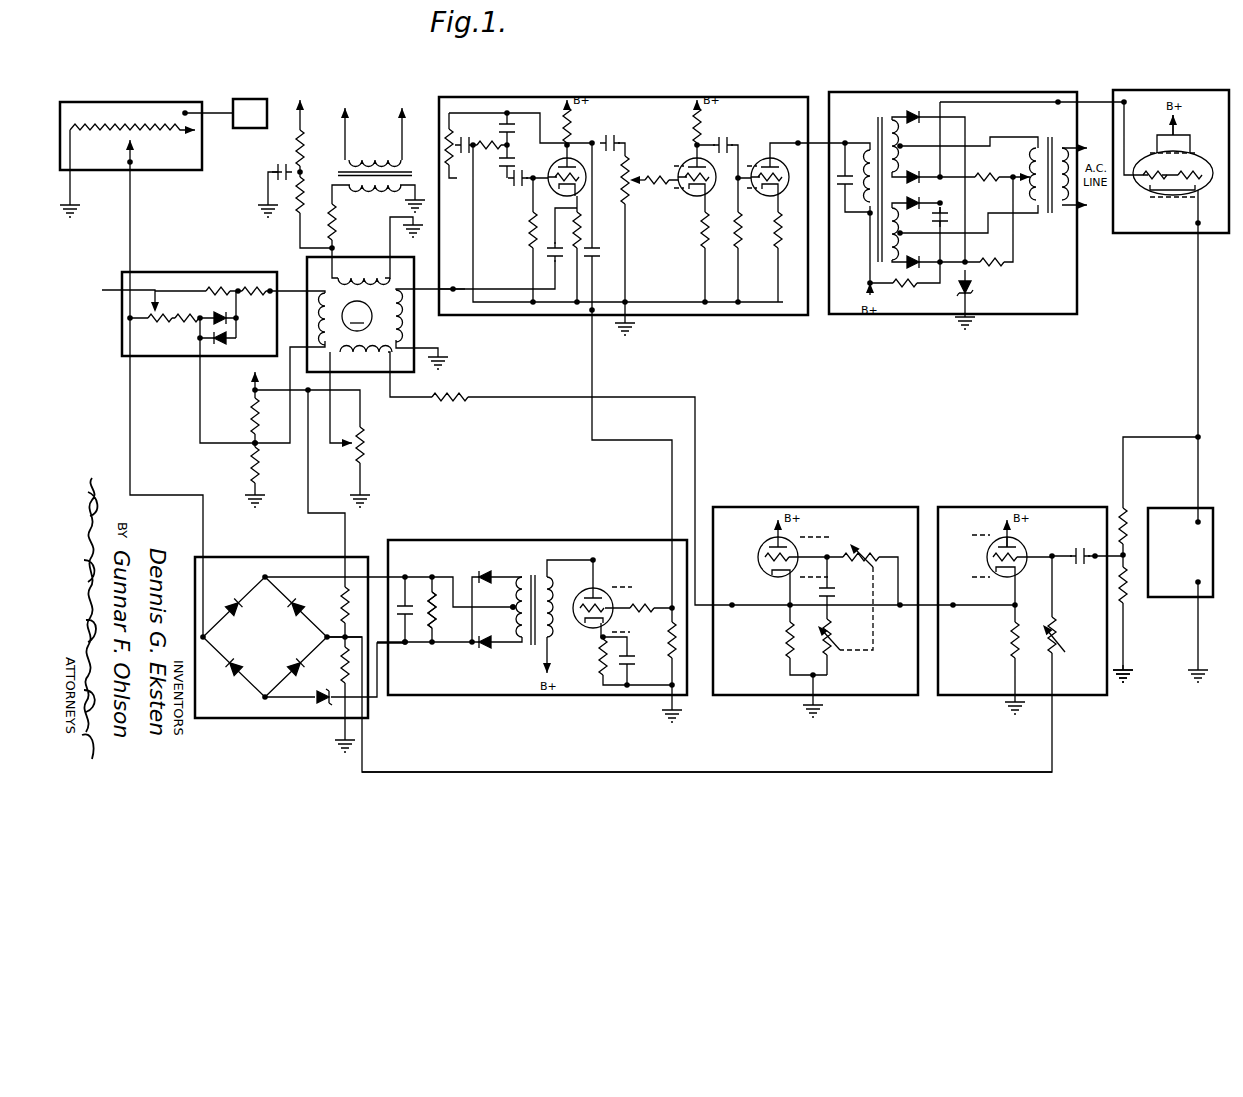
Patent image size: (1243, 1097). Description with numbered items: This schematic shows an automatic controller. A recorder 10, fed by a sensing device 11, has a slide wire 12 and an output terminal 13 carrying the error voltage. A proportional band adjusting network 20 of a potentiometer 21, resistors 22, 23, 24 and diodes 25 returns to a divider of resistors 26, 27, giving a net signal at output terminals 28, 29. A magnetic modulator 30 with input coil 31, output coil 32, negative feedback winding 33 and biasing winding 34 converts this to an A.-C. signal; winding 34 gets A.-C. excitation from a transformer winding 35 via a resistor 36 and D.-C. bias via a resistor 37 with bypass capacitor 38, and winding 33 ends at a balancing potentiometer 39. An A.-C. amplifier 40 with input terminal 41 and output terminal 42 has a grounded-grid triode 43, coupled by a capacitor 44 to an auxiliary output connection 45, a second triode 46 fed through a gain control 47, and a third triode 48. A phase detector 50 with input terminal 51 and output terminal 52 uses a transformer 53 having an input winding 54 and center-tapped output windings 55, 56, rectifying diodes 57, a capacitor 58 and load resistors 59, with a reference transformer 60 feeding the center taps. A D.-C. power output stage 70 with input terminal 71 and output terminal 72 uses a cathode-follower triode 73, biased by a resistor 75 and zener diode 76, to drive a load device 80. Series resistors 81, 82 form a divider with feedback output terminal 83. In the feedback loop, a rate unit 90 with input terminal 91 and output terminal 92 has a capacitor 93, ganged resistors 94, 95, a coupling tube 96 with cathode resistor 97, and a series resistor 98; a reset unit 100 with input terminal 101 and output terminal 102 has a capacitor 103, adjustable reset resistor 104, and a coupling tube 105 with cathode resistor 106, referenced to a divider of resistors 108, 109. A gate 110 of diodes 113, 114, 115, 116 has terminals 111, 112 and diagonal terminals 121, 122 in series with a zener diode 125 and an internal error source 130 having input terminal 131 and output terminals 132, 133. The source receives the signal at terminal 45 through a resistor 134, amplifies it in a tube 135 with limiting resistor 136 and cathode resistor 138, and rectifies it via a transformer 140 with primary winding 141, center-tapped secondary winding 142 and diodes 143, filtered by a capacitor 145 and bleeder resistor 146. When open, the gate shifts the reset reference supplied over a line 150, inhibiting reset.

The recorder 10 is at (174, 172).
The sensing device 11 is at (246, 123).
The input transmitting slide wire 12 is at (147, 120).
The output terminal 13 is at (127, 162).
The proportional band adjusting network 20 is at (122, 290).
The potentiometer 21 is at (158, 325).
The resistor 22 is at (186, 325).
The resistor 23 is at (214, 288).
The resistor 24 is at (239, 313).
The diodes 25 is at (231, 332).
The resistor 26 is at (250, 417).
The resistor 27 is at (250, 480).
The output terminal 28 is at (270, 292).
The output terminal 29 is at (253, 445).
The magnetic modulator 30 is at (360, 314).
The input coil 31 is at (318, 329).
The output coil 32 is at (404, 312).
The negative feedback winding 33 is at (364, 354).
The biasing winding 34 is at (366, 275).
The transformer winding 35 is at (387, 195).
The resistor 36 is at (344, 227).
The resistor 37 is at (303, 152).
The bypass capacitor 38 is at (274, 170).
The balancing potentiometer 39 is at (366, 455).
The A.-C. amplifier 40 is at (796, 94).
The input terminal 41 is at (462, 267).
The output terminal 42 is at (804, 120).
The triode 43 is at (570, 158).
The capacitor 44 is at (596, 252).
The auxiliary output connection 45 is at (591, 312).
The second triode 46 is at (693, 156).
The gain control 47 is at (630, 170).
The third triode 48 is at (766, 156).
The phase detector 50 is at (1058, 92).
The input terminal 51 is at (848, 140).
The output terminal 52 is at (1058, 104).
The transformer 53 is at (874, 124).
The input winding 54 is at (864, 208).
The balanced output winding 55 is at (900, 146).
The balanced output winding 56 is at (890, 231).
The rectifying diodes 57 is at (912, 114).
The capacitor 58 is at (949, 214).
The load resistors 59 is at (984, 176).
The transformer 60 is at (1050, 216).
The D.-C. power output stage 70 is at (1130, 234).
The input terminal 71 is at (1128, 103).
The output terminal 72 is at (1196, 224).
The triode 73 is at (1186, 152).
The resistor 75 is at (906, 288).
The zener diode 76 is at (978, 286).
The load device 80 is at (1213, 508).
The resistor 81 is at (1128, 504).
The resistor 82 is at (1128, 600).
The feedback output terminal 83 is at (1135, 583).
The rate unit 90 is at (898, 504).
The input terminal 91 is at (900, 608).
The output terminal 92 is at (736, 604).
The capacitor 93 is at (834, 592).
The resistor 94 is at (870, 550).
The resistor 95 is at (834, 634).
The coupling tube 96 is at (764, 546).
The cathode resistor 97 is at (785, 646).
The resistor 98 is at (454, 395).
The reset unit 100 is at (1098, 504).
The input terminal 101 is at (1095, 562).
The output terminal 102 is at (954, 608).
The capacitor 103 is at (1094, 528).
The reset resistor 104 is at (1058, 636).
The coupling tube 105 is at (1022, 544).
The cathode resistor 106 is at (1010, 644).
The resistor 108 is at (342, 616).
The resistor 109 is at (342, 670).
The gate 110 is at (362, 556).
The input terminal 111 is at (208, 637).
The output terminal 112 is at (325, 637).
The diode 113 is at (228, 606).
The diode 114 is at (308, 598).
The diode 115 is at (236, 674).
The diode 116 is at (294, 664).
The diagonal terminal 121 is at (263, 576).
The diagonal terminal 122 is at (265, 700).
The zener diode 125 is at (320, 704).
The source of controller internal error voltage 130 is at (654, 540).
The input terminal 131 is at (672, 606).
The output terminal 132 is at (422, 566).
The output terminal 133 is at (408, 644).
The resistor 134 is at (668, 650).
The amplifier tube 135 is at (584, 592).
The input limiting resistor 136 is at (652, 596).
The cathode resistor 138 is at (600, 660).
The transformer 140 is at (528, 590).
The primary winding 141 is at (552, 626).
The center tapped secondary winding 142 is at (522, 640).
The diodes 143 is at (488, 582).
The capacitor 145 is at (435, 590).
The bleeder resistor 146 is at (436, 614).
The line 150 is at (796, 758).